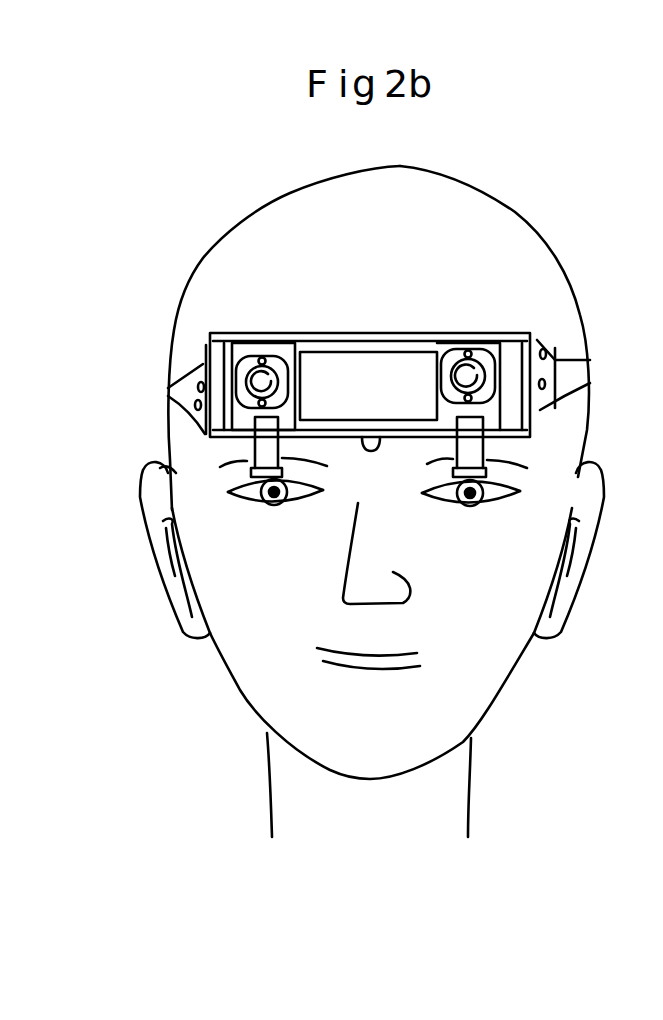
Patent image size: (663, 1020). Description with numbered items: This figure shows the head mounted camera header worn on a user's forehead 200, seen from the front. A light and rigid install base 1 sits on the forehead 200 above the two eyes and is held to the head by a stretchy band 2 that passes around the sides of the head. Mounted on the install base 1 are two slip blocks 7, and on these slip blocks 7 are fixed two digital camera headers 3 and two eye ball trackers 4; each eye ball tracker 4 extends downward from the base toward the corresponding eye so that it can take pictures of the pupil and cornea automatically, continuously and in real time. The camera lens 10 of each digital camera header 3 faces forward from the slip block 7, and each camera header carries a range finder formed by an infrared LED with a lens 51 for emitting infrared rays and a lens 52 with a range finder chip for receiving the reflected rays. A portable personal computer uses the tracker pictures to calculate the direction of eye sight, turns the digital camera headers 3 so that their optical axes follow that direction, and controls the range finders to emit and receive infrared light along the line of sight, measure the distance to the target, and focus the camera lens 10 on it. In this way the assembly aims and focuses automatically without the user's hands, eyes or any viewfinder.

The forehead 200 is at (473, 310).
The install base 1 is at (250, 340).
The slip block 7 is at (292, 352).
The lens 51 is at (238, 343).
The camera lens 10 is at (258, 383).
The digital camera header 3 is at (212, 367).
The stretchy band 2 is at (553, 362).
The lens 52 is at (167, 470).
The eye ball tracker 4 is at (245, 472).